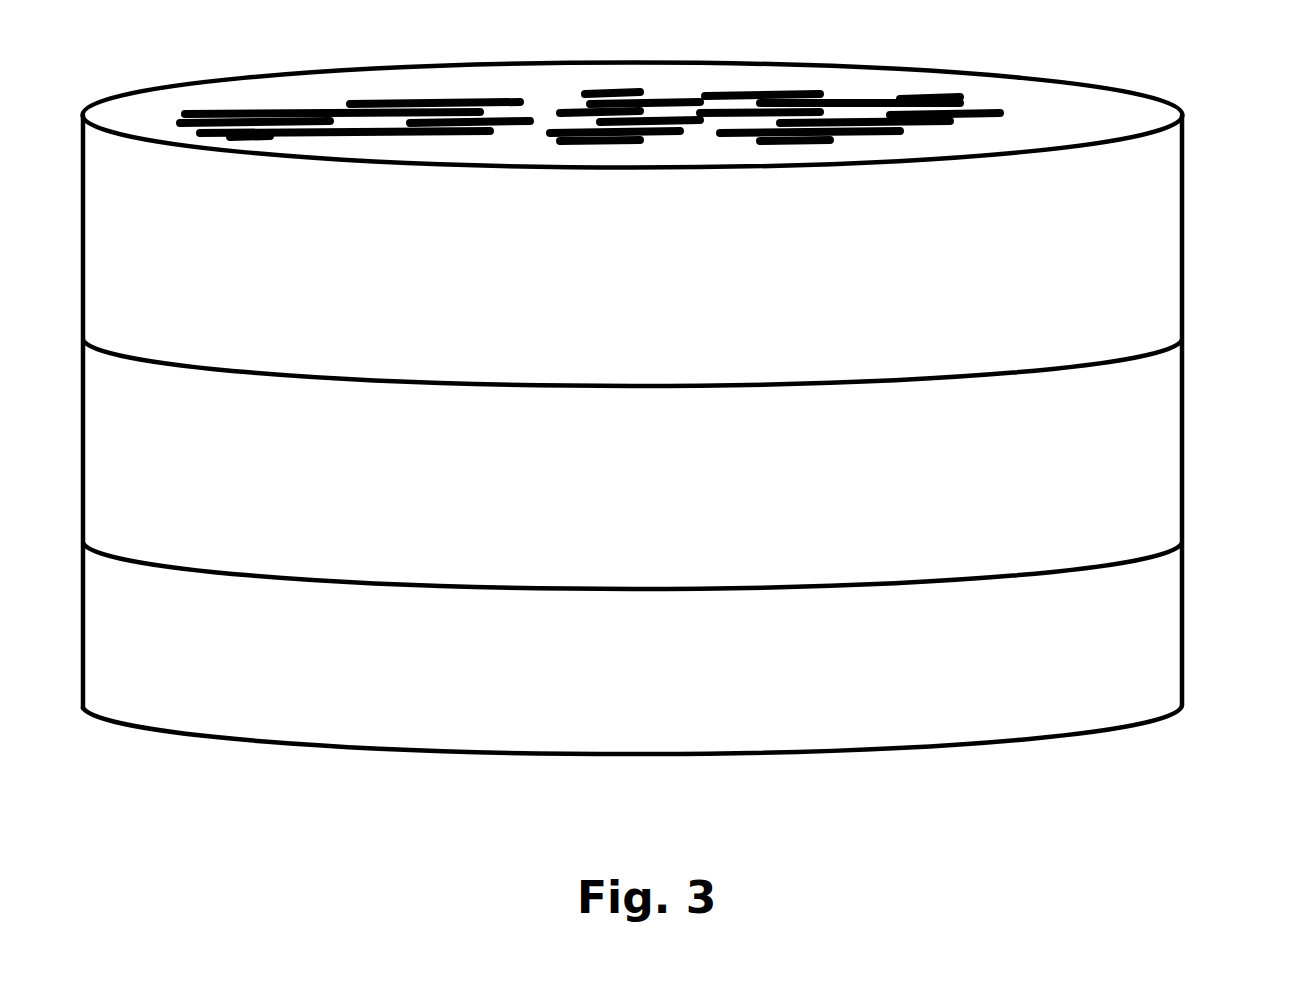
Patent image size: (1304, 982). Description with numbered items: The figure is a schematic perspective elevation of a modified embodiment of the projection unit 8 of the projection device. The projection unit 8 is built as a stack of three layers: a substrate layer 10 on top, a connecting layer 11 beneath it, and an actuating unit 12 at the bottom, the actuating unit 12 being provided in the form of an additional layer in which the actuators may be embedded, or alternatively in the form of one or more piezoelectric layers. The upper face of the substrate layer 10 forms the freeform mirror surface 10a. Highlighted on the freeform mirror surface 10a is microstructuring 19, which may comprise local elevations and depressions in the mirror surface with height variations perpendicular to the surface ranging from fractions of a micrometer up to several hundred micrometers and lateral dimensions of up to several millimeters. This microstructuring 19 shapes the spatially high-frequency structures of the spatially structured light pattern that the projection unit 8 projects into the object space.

The projection unit 8 is at (1141, 750).
The substrate layer 10 is at (690, 326).
The freeform mirror surface 10a is at (1145, 122).
The connecting layer 11 is at (678, 530).
The actuating unit 12 is at (672, 718).
The microstructuring 19 is at (672, 98).